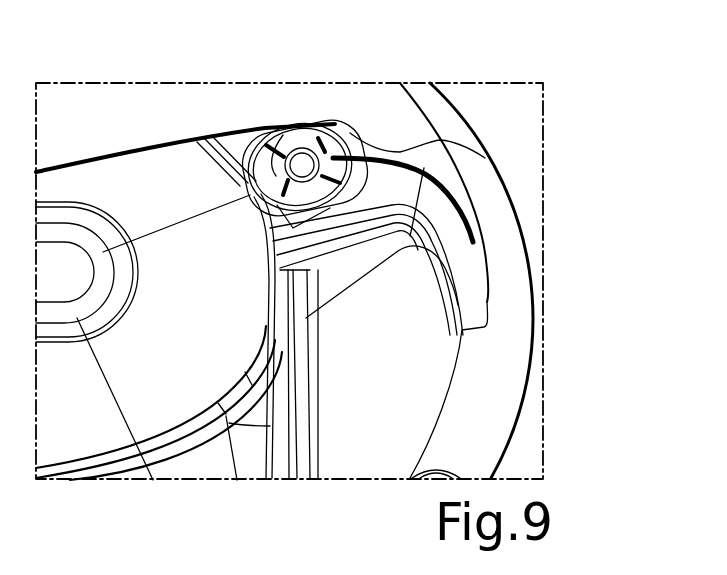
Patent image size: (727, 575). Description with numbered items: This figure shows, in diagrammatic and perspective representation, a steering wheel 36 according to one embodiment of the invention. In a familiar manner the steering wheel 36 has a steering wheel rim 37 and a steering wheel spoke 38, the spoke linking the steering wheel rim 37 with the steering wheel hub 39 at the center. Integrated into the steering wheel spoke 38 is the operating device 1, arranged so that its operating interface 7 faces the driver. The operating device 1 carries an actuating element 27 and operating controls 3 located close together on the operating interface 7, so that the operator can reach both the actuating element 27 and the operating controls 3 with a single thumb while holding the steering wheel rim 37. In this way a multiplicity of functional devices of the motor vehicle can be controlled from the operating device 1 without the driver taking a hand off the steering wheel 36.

The operating device 1 is at (296, 148).
The operating controls 3 is at (292, 126).
The operating interface 7 is at (338, 130).
The actuating element 27 is at (262, 128).
The steering wheel 36 is at (497, 176).
The steering wheel rim 37 is at (498, 372).
The steering wheel spoke 38 is at (358, 254).
The steering wheel hub 39 is at (123, 182).